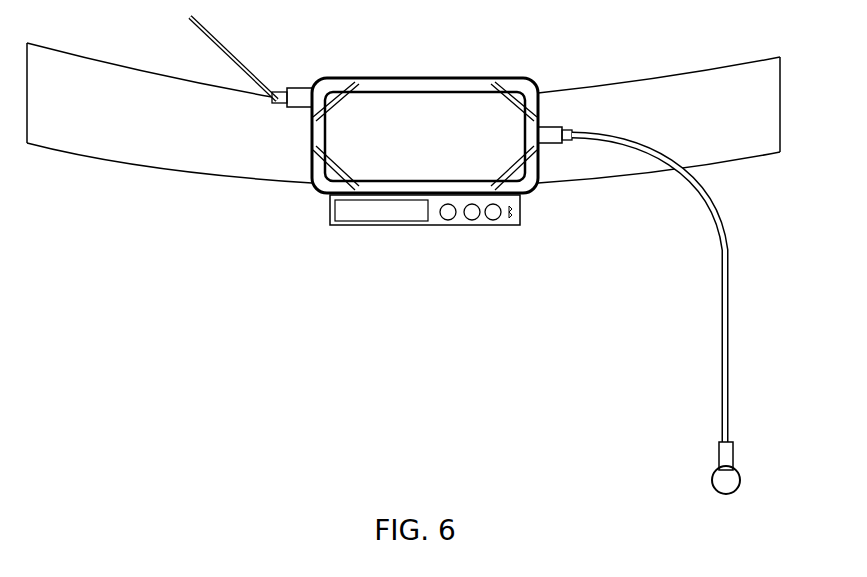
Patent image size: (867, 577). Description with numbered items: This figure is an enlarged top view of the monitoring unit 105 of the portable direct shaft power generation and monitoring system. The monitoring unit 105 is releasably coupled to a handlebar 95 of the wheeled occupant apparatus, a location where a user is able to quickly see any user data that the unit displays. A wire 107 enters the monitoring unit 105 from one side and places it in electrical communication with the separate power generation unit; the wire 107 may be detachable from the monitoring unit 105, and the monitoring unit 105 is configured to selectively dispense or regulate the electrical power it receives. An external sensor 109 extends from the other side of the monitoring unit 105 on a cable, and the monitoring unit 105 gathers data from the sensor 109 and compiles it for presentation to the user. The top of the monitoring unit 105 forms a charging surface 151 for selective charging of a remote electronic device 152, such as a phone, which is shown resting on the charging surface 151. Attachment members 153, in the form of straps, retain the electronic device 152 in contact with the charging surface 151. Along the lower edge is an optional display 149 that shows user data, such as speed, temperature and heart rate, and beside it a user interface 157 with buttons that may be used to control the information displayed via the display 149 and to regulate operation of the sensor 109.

The handlebar 95 is at (137, 128).
The wire 107 is at (258, 70).
The charging surface 151 is at (435, 88).
The remote electronic device 152 is at (347, 143).
The attachment member 153 is at (510, 105).
The display 149 is at (400, 222).
The user interface 157 is at (470, 222).
The external sensor 109 is at (684, 314).
The monitoring unit 105 is at (323, 305).